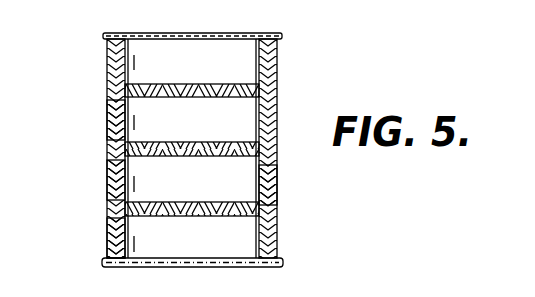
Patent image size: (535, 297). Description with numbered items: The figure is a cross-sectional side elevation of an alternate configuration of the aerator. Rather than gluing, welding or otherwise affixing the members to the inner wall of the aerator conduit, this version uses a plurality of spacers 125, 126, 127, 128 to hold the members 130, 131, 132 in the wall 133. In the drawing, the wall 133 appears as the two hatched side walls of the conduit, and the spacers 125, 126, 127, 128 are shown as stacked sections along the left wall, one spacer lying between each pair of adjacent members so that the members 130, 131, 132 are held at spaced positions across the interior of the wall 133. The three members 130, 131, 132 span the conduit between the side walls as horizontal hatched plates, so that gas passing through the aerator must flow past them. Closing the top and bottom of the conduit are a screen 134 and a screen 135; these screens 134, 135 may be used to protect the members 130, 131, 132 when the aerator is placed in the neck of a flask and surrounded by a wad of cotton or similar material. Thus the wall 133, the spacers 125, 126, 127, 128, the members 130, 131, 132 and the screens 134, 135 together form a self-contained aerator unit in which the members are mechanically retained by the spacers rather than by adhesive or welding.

The spacer 125 is at (107, 62).
The spacer 126 is at (107, 126).
The spacer 127 is at (107, 190).
The spacer 128 is at (107, 251).
The member 130 is at (277, 90).
The member 131 is at (262, 143).
The member 132 is at (263, 212).
The wall 133 is at (277, 186).
The screen 134 is at (254, 33).
The screen 135 is at (243, 267).